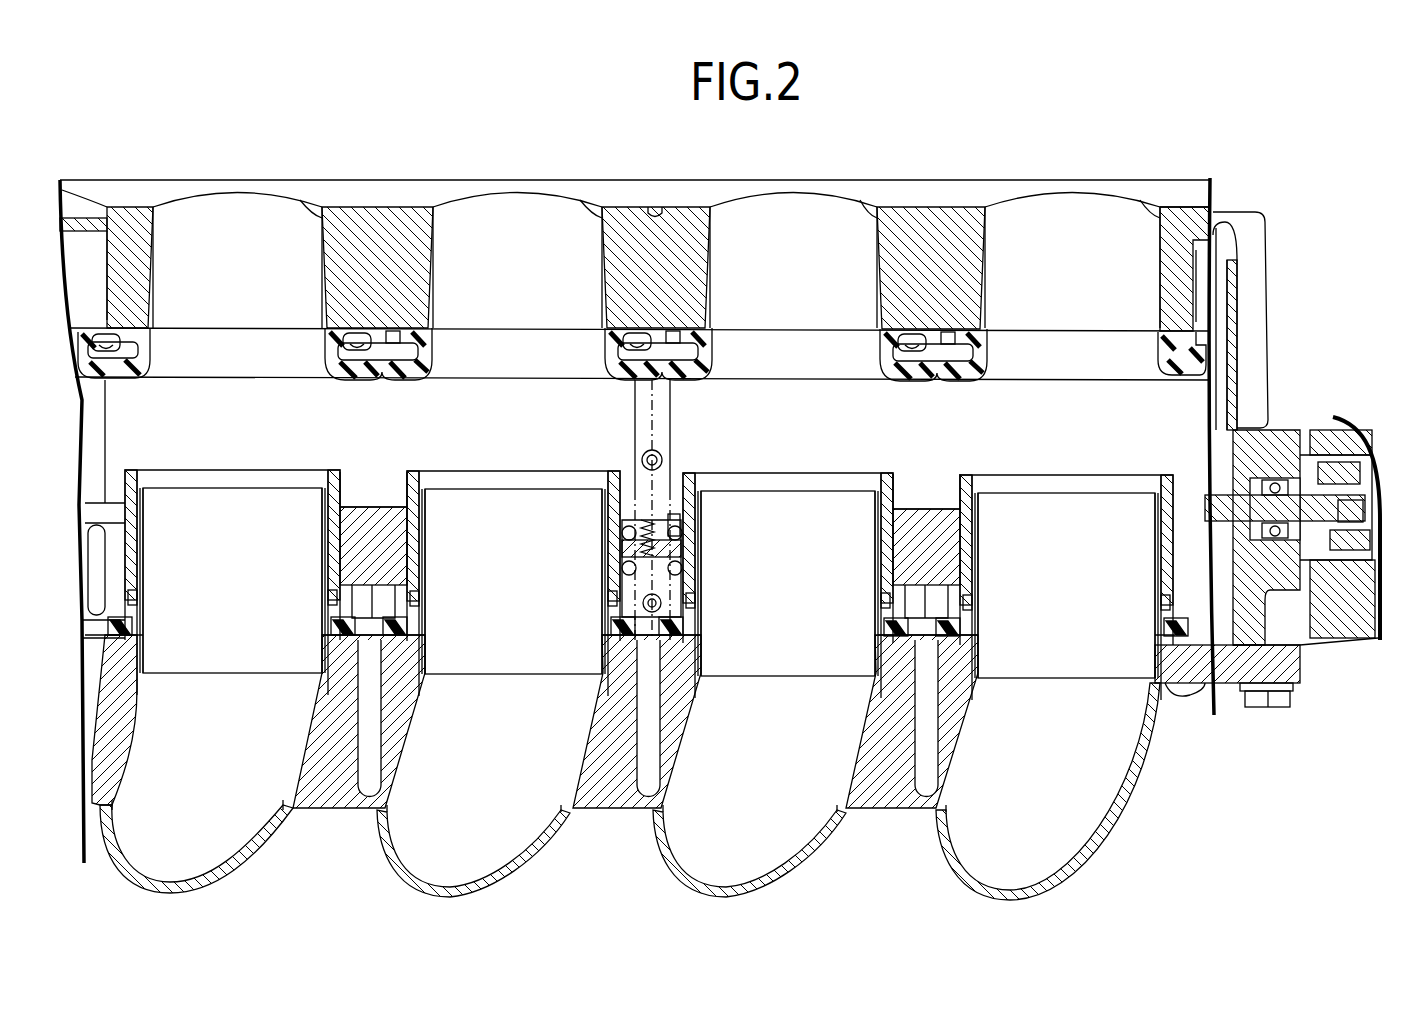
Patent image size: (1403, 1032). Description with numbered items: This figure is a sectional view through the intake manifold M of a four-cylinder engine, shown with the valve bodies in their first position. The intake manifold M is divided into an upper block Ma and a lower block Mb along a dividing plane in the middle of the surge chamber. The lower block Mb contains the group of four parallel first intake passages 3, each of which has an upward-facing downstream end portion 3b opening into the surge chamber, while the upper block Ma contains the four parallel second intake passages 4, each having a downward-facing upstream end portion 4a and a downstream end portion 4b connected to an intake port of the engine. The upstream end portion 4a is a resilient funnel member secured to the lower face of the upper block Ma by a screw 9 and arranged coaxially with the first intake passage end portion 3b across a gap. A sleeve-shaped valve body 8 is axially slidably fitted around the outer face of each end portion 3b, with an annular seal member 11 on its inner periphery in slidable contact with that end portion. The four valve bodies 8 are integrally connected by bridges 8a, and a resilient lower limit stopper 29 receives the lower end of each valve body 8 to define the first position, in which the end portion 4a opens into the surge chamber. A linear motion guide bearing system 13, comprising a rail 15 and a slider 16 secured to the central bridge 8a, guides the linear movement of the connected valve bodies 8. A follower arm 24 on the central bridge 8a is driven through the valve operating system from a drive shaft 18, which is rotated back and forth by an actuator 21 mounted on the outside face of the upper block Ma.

The intake manifold M is at (923, 172).
The upper block Ma is at (960, 218).
The lower block Mb is at (900, 800).
The first intake passage 3 is at (198, 782).
The downstream end portion of the first intake passage 3b is at (235, 503).
The second intake passage 4 is at (219, 259).
The upstream end portion of the second intake passage 4a is at (150, 350).
The downstream end portion of the second intake passage 4b is at (320, 218).
The valve body 8 is at (130, 470).
The bridge 8a is at (362, 528).
The screw 9 is at (352, 335).
The seal member 11 is at (137, 600).
The linear motion guide bearing system 13 is at (667, 432).
The rail 15 is at (671, 404).
The slider 16 is at (662, 505).
The drive shaft 18 is at (1245, 450).
The actuator 21 is at (1355, 428).
The follower arm 24 is at (690, 528).
The lower limit stopper 29 is at (135, 626).